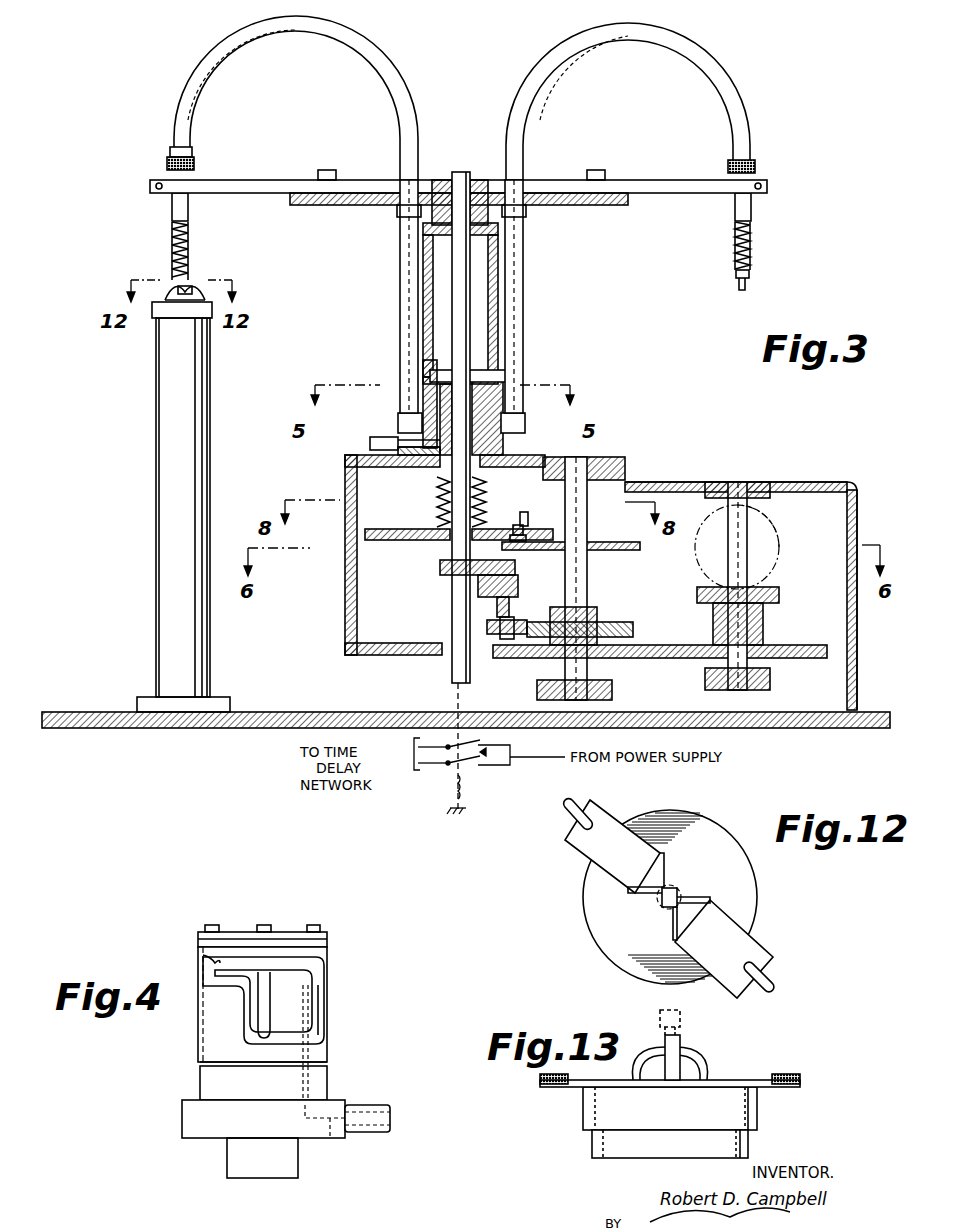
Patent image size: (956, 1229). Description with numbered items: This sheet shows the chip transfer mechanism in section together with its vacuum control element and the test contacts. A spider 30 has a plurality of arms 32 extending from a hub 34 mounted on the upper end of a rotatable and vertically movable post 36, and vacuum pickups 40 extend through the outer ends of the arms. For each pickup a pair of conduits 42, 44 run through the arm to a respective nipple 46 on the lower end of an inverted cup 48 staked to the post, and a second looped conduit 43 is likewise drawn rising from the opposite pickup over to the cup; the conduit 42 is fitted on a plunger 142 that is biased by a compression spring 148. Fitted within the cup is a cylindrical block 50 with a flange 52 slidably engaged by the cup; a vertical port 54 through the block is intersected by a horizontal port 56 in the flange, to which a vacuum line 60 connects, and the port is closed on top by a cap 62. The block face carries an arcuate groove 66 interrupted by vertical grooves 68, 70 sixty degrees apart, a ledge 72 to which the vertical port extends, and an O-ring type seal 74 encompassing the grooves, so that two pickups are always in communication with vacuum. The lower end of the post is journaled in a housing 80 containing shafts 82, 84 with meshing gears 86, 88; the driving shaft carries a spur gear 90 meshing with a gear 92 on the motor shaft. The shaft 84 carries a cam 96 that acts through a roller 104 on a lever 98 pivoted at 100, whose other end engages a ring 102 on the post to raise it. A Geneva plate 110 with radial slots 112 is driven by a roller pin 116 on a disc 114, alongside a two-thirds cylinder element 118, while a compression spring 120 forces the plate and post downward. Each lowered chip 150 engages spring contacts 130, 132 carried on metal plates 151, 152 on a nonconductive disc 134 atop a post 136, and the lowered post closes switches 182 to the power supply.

In FIG. 3, the spider 30 is at (158, 180).
In FIG. 3, the arms 32 is at (227, 180).
In FIG. 3, the hub 34 is at (448, 178).
In FIG. 3, the post 36 is at (462, 172).
In FIG. 3, the vacuum pickups 40 is at (168, 207).
In FIG. 3, the conduit 42 is at (280, 30).
In FIG. 3, the right arcuate arm 43 is at (622, 35).
In FIG. 3, the conduit 44 is at (398, 250).
In FIG. 3, the nipple 46 is at (396, 428).
In FIG. 3, the inverted cup 48 is at (503, 334).
In FIG. 3, the cylindrical block 50 is at (504, 446).
In FIG. 4, the cylindrical block 50 is at (208, 1039).
In FIG. 4, the flange 52 is at (185, 1116).
In FIG. 3, the vertical port 54 is at (421, 401).
In FIG. 4, the vertical port 54 is at (325, 1073).
In FIG. 3, the horizontal port 56 is at (412, 456).
In FIG. 4, the horizontal port 56 is at (326, 1138).
In FIG. 3, the vacuum line 60 is at (368, 444).
In FIG. 4, the vacuum line 60 is at (358, 1108).
In FIG. 3, the cap 62 is at (427, 374).
In FIG. 4, the cap 62 is at (282, 938).
In FIG. 4, the arcuate groove 66 is at (220, 976).
In FIG. 4, the vertical groove 68 is at (266, 993).
In FIG. 4, the vertical groove 70 is at (320, 1000).
In FIG. 4, the ledge 72 is at (326, 982).
In FIG. 4, the O-ring type seal 74 is at (245, 1010).
In FIG. 3, the housing 80 is at (380, 646).
In FIG. 3, the driving shaft 82 is at (743, 560).
In FIG. 3, the shaft 84 is at (588, 578).
In FIG. 3, the gear 86 is at (800, 656).
In FIG. 3, the gear 88 is at (632, 655).
In FIG. 3, the spur gear 90 is at (781, 590).
In FIG. 3, the gear 92 is at (782, 520).
In FIG. 3, the cam 96 is at (605, 620).
In FIG. 3, the lever 98 is at (497, 606).
In FIG. 3, the pivot 100 is at (478, 582).
In FIG. 3, the ring 102 is at (440, 560).
In FIG. 3, the roller 104 is at (505, 645).
In FIG. 3, the plate 110 is at (459, 524).
In FIG. 3, the radial slots 112 is at (522, 525).
In FIG. 3, the disc 114 is at (640, 546).
In FIG. 3, the roller pin 116 is at (522, 521).
In FIG. 3, the two-thirds cylinder element 118 is at (620, 481).
In FIG. 3, the compression spring 120 is at (489, 494).
In FIG. 3, the contact 130 is at (180, 281).
In FIG. 12, the contact 130 is at (645, 862).
In FIG. 13, the contact 130 is at (637, 1063).
In FIG. 3, the contact 132 is at (195, 290).
In FIG. 12, the contact 132 is at (698, 920).
In FIG. 13, the contact 132 is at (695, 1060).
In FIG. 3, the nonconductive disc 134 is at (158, 310).
In FIG. 12, the nonconductive disc 134 is at (583, 905).
In FIG. 13, the nonconductive disc 134 is at (756, 1113).
In FIG. 3, the post 136 is at (204, 392).
In FIG. 13, the plunger 142 is at (682, 1018).
In FIG. 3, the compression spring 148 is at (190, 244).
In FIG. 12, the chip 150 is at (661, 904).
In FIG. 12, the metal plate 151 is at (580, 830).
In FIG. 13, the metal plate 151 is at (592, 1085).
In FIG. 12, the metal plate 152 is at (770, 960).
In FIG. 13, the metal plate 152 is at (770, 1080).
In FIG. 3, the switches 182 is at (505, 752).